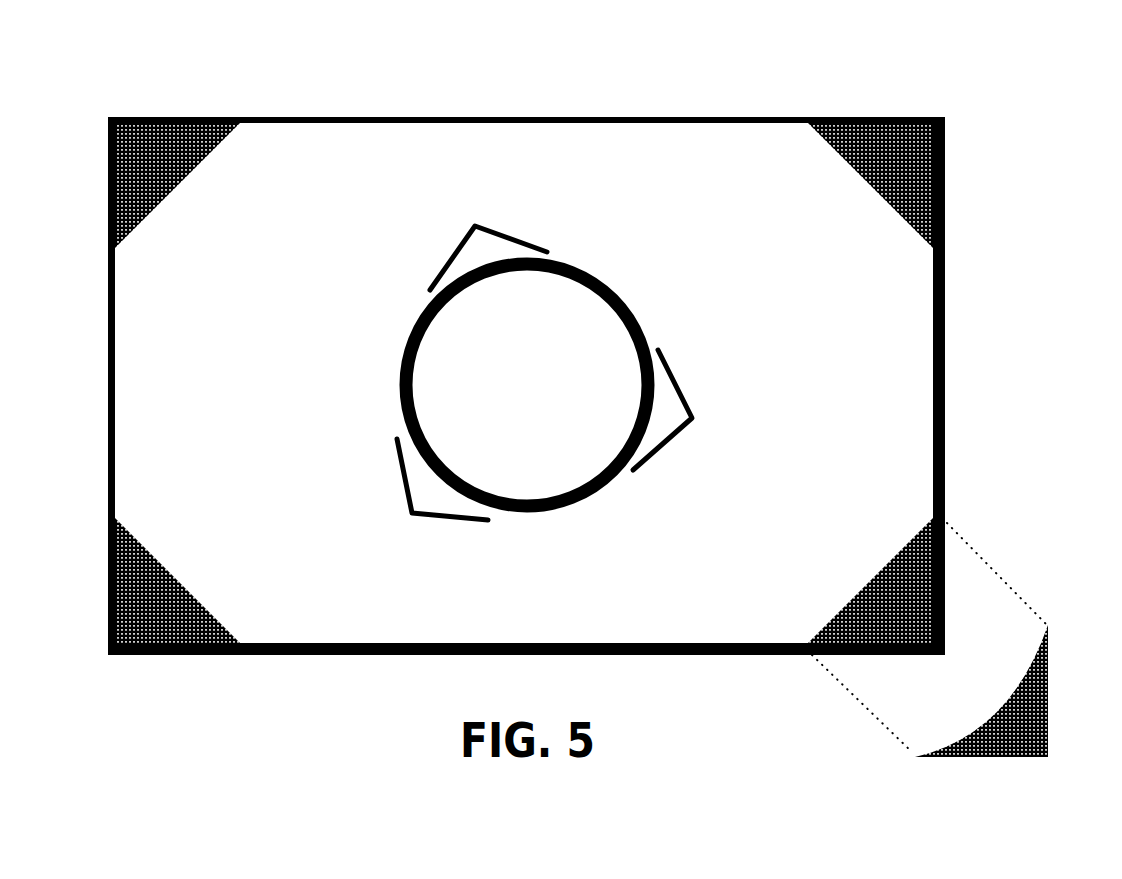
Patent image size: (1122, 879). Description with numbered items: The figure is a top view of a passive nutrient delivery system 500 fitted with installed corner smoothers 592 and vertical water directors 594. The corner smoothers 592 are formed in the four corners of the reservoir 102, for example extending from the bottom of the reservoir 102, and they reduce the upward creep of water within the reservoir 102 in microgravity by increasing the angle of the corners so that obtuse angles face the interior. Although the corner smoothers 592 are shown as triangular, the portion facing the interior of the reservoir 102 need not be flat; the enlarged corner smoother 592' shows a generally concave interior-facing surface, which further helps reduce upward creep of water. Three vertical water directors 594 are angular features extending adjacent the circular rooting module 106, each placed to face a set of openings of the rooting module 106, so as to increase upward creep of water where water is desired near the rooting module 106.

The passive nutrient delivery system 500 is at (973, 96).
The reservoir 102 is at (945, 400).
The corner smoother 592 is at (524, 383).
The corner smoother 592' is at (930, 672).
The rooting module 106 is at (578, 505).
The vertical water director 594 is at (503, 238).